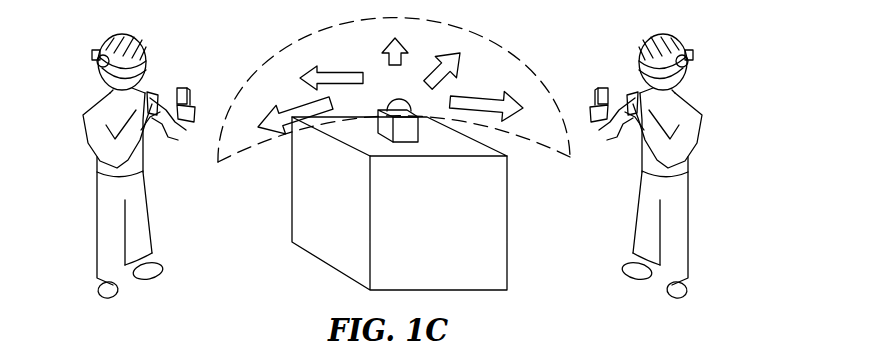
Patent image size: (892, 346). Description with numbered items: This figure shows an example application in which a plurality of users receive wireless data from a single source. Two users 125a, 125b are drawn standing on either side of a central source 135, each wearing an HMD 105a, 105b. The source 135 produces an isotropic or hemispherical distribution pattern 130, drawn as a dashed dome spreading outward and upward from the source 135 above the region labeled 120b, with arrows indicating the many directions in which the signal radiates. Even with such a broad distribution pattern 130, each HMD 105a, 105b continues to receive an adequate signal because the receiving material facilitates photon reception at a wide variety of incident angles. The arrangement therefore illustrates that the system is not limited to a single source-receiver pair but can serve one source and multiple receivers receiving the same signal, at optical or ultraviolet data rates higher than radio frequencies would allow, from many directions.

The HMD 105a is at (146, 62).
The HMD 105b is at (690, 50).
The user 125a is at (97, 158).
The user 125b is at (692, 182).
The second location / environment 120b is at (575, 43).
The distribution pattern 130 is at (269, 146).
The source 135 is at (405, 117).